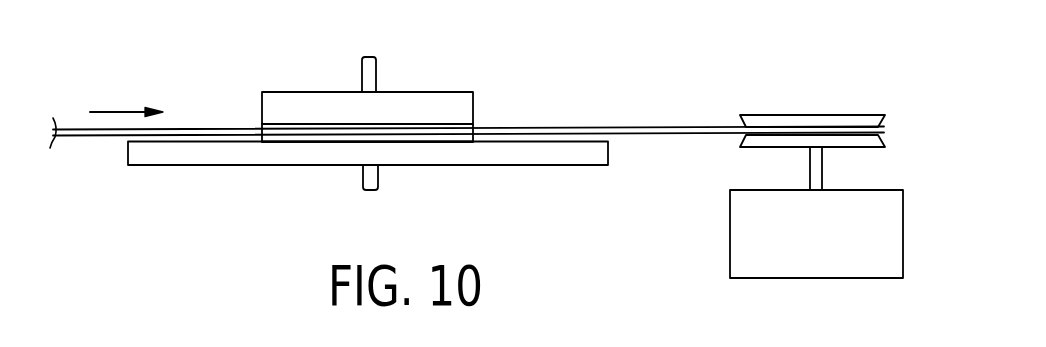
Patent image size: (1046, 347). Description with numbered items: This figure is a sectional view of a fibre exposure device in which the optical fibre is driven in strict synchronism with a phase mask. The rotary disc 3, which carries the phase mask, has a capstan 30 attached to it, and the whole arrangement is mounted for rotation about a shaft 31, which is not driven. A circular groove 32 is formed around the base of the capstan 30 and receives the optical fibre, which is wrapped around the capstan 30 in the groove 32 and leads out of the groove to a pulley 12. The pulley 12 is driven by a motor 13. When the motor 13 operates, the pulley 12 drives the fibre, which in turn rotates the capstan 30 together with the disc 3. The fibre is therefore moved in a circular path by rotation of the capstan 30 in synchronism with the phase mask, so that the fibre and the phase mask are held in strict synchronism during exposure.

The rotary disc 3 is at (574, 168).
The pulley 12 is at (763, 115).
The motor 13 is at (730, 257).
The capstan 30 is at (466, 91).
The shaft 31 is at (377, 64).
The circular groove 32 is at (440, 144).